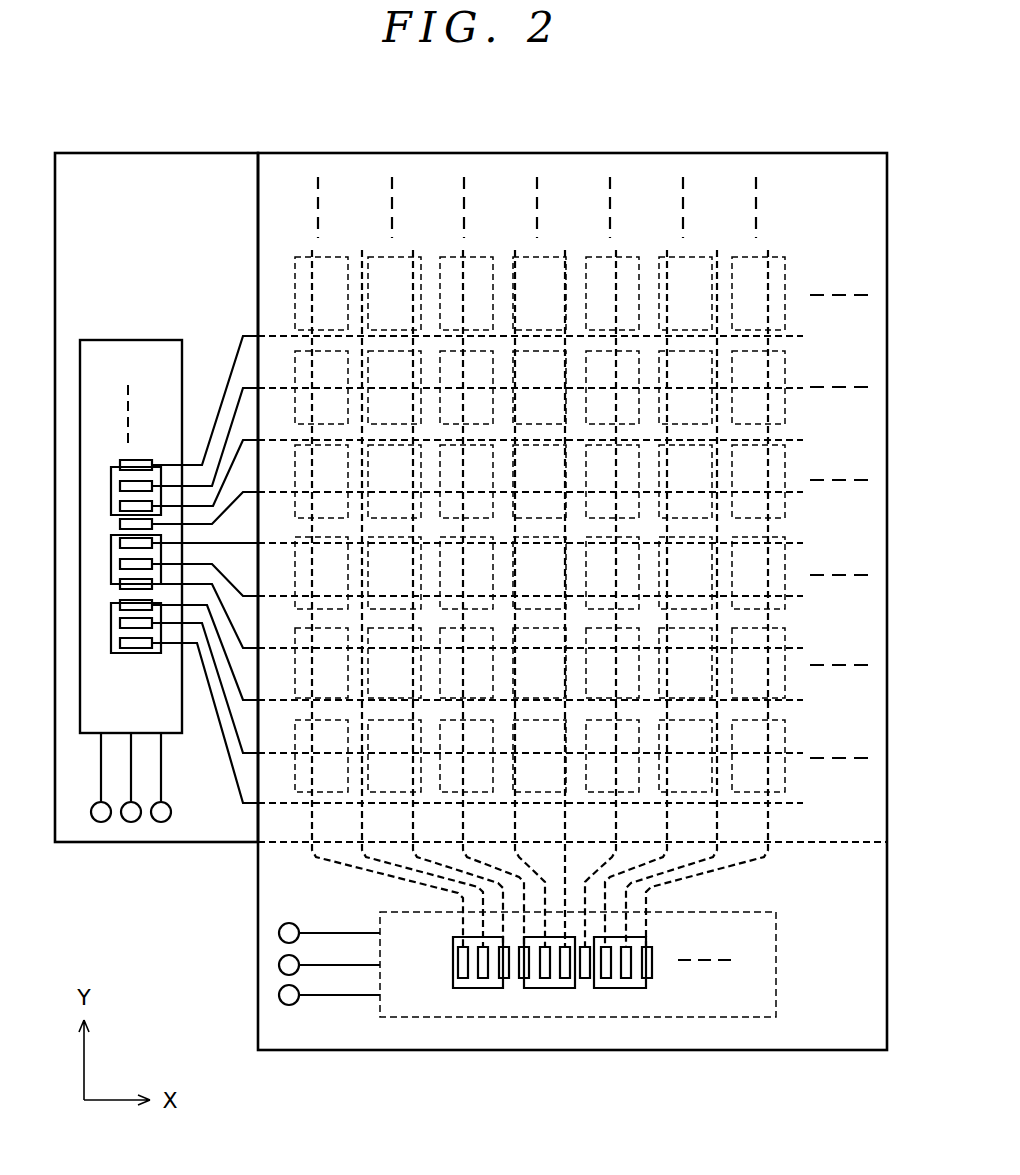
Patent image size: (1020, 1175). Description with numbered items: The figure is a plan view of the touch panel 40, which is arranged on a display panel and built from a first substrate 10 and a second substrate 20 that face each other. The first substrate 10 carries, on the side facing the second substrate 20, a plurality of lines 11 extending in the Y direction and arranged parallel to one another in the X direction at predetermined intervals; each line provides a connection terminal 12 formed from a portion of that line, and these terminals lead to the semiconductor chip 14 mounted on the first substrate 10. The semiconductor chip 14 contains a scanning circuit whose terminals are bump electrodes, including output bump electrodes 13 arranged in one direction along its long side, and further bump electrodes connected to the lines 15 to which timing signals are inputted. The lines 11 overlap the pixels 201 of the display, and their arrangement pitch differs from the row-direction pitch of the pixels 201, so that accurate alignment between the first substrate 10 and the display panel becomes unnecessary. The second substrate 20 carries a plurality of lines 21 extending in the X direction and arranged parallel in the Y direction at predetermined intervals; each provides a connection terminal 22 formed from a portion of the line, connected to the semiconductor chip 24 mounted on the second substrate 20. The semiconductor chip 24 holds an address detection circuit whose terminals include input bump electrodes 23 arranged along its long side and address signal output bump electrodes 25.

The first substrate 10 is at (258, 195).
The lines 11 is at (616, 280).
The connection terminals 12 is at (625, 978).
The output bump electrodes 13 is at (540, 988).
The semiconductor chip 14 is at (778, 960).
The lines 15 is at (279, 995).
The second substrate 20 is at (118, 153).
The lines 21 is at (755, 388).
The connection terminals 22 is at (140, 650).
The input bump electrodes 23 is at (117, 463).
The semiconductor chip 24 is at (158, 340).
The address signal output bump electrodes 25 is at (131, 822).
The touch panel 40 is at (725, 152).
The pixels 201 is at (323, 257).